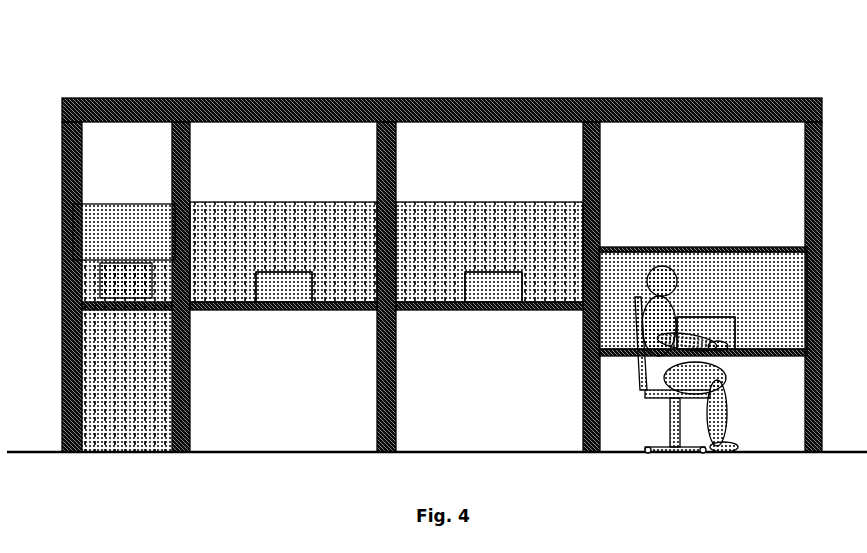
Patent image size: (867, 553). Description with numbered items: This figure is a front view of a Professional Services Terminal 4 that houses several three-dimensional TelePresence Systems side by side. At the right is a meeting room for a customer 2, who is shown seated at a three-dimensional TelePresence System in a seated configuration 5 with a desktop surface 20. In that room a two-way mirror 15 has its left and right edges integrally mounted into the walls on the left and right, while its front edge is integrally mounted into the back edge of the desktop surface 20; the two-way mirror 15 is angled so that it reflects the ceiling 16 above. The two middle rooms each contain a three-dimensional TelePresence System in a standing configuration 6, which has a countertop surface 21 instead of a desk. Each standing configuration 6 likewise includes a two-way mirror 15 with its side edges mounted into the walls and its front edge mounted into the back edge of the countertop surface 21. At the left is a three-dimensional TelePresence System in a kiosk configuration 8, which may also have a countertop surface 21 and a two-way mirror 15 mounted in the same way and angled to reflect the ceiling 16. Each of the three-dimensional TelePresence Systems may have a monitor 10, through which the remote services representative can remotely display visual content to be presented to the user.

The customer 2 is at (645, 270).
The Professional Services Terminal 4 is at (308, 97).
The seated configuration 5 is at (750, 455).
The standing configuration 6 is at (298, 460).
The kiosk configuration 8 is at (127, 455).
The monitor 10 is at (125, 283).
The two-way mirror 15 is at (148, 228).
The ceiling 16 is at (117, 123).
The desktop surface 20 is at (730, 357).
The countertop surface 21 is at (148, 310).